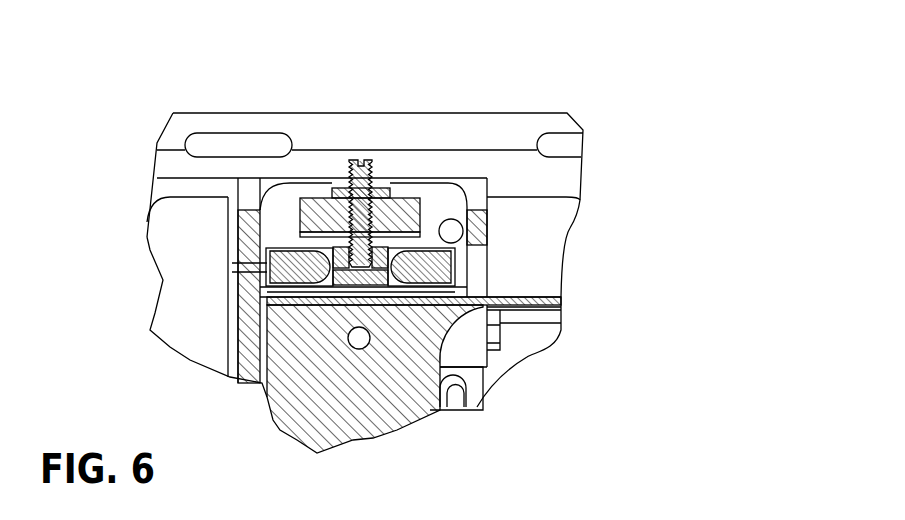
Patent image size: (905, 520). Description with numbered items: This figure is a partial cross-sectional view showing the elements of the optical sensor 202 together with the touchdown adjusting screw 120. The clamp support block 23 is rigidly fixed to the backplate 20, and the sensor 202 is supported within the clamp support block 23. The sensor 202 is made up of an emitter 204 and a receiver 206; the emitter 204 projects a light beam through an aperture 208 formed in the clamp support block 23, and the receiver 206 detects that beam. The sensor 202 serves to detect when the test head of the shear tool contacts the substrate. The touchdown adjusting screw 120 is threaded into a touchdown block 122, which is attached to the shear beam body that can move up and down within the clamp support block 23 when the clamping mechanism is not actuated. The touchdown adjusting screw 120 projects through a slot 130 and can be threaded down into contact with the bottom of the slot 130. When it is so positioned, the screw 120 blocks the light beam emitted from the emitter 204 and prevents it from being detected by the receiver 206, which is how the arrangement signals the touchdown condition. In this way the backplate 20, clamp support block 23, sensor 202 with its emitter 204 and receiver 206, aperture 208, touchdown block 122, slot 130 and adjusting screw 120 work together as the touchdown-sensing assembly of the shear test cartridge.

The backplate 20 is at (548, 113).
The clamp support block 23 is at (275, 170).
The touchdown adjusting screw 120 is at (356, 160).
The touchdown block 122 is at (416, 184).
The slot 130 is at (423, 407).
The optical sensor 202 is at (200, 303).
The emitter 204 is at (430, 270).
The receiver 206 is at (283, 285).
The aperture 208 is at (423, 408).